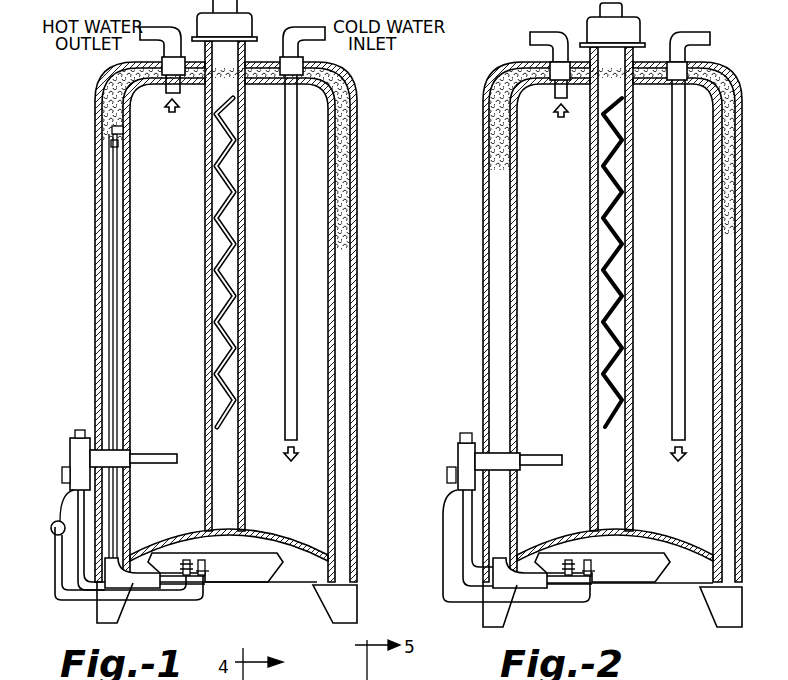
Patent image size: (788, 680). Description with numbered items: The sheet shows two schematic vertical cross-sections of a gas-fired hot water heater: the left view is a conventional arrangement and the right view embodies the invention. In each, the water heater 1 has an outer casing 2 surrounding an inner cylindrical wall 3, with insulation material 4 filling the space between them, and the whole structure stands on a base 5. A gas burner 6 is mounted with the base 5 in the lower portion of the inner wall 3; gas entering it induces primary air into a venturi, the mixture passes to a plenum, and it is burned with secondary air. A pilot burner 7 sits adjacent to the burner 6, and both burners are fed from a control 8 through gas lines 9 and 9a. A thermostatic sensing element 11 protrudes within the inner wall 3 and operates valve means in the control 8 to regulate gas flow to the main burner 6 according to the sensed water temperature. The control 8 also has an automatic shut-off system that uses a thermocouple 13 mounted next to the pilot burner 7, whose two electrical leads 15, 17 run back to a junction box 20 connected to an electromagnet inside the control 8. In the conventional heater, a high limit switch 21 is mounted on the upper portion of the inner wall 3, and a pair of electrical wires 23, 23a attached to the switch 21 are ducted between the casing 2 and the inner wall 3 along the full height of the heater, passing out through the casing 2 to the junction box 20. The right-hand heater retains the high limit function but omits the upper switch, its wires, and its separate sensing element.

In FIG. 1, the water heater 1 is at (360, 134).
In FIG. 2, the water heater 1 is at (698, 322).
In FIG. 1, the outer casing 2 is at (352, 153).
In FIG. 2, the outer casing 2 is at (623, 322).
In FIG. 1, the inner cylindrical wall 3 is at (337, 170).
In FIG. 2, the inner cylindrical wall 3 is at (637, 330).
In FIG. 1, the insulation material 4 is at (344, 186).
In FIG. 2, the insulation material 4 is at (626, 151).
In FIG. 1, the base 5 is at (333, 605).
In FIG. 2, the base 5 is at (612, 604).
In FIG. 1, the burner 6 is at (280, 578).
In FIG. 2, the burner 6 is at (630, 600).
In FIG. 1, the pilot burner 7 is at (175, 592).
In FIG. 2, the pilot burner 7 is at (542, 596).
In FIG. 1, the control 8 is at (70, 449).
In FIG. 2, the control 8 is at (443, 461).
In FIG. 1, the gas line 9 is at (80, 578).
In FIG. 1, the gas line 9a is at (55, 601).
In FIG. 1, the thermostatic sensing element 11 is at (153, 450).
In FIG. 2, the thermostatic sensing element 11 is at (518, 451).
In FIG. 1, the thermocouple 13 is at (206, 564).
In FIG. 2, the thermocouple 13 is at (602, 588).
In FIG. 1, the electrical lead 15 is at (186, 588).
In FIG. 1, the electrical lead 17 is at (205, 590).
In FIG. 1, the junction box 20 is at (51, 529).
In FIG. 1, the high limit switch 21 is at (113, 126).
In FIG. 1, the electrical wire 23 is at (108, 200).
In FIG. 1, the electrical wire 23a is at (114, 212).